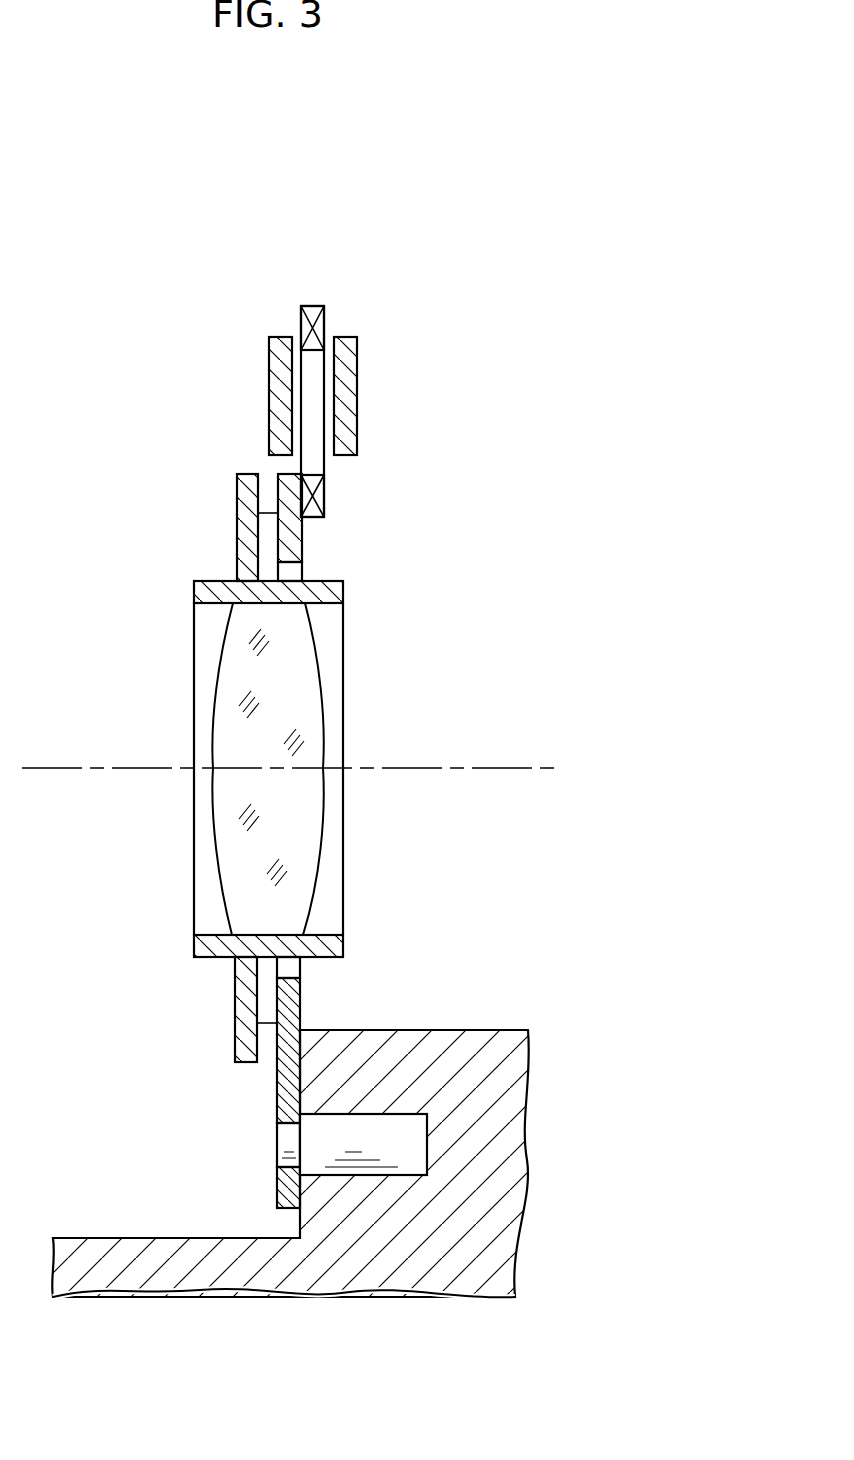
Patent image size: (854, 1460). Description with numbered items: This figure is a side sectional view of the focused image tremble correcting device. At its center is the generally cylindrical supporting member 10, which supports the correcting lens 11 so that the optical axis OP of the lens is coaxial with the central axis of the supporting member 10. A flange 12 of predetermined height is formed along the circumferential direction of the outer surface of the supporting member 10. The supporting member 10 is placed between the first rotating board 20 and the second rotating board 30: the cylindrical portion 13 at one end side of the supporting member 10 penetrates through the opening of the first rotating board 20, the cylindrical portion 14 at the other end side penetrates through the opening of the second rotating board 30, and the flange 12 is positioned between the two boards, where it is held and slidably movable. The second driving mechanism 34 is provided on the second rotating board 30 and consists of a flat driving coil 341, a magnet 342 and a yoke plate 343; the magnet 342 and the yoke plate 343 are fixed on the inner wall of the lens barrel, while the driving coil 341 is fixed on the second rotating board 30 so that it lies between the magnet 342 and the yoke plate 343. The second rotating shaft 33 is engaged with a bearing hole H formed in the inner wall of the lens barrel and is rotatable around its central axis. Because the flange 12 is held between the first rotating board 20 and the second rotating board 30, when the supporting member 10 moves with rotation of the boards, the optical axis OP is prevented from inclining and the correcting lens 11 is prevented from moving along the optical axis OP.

The supporting member 10 is at (228, 713).
The correcting lens 11 is at (283, 817).
The flange 12 is at (268, 523).
The cylindrical portion 13 is at (212, 581).
The cylindrical portion 14 is at (328, 581).
The first rotating board 20 is at (210, 1053).
The second rotating board 30 is at (319, 1067).
The second rotating shaft 33 is at (340, 1113).
The second driving mechanism 34 is at (347, 361).
The driving coil 341 is at (317, 307).
The magnet 342 is at (280, 345).
The yoke plate 343 is at (345, 393).
The bearing hole H is at (415, 1120).
The optical axis OP is at (508, 768).